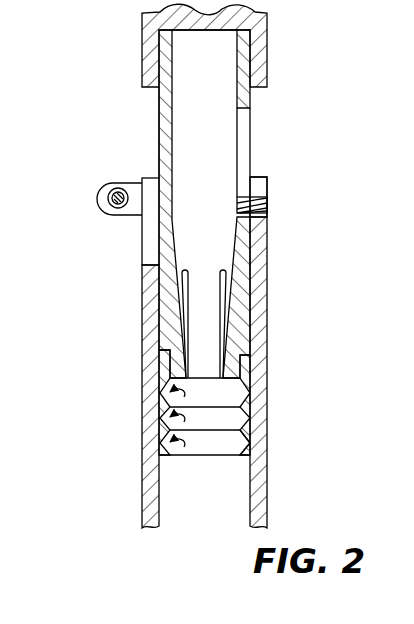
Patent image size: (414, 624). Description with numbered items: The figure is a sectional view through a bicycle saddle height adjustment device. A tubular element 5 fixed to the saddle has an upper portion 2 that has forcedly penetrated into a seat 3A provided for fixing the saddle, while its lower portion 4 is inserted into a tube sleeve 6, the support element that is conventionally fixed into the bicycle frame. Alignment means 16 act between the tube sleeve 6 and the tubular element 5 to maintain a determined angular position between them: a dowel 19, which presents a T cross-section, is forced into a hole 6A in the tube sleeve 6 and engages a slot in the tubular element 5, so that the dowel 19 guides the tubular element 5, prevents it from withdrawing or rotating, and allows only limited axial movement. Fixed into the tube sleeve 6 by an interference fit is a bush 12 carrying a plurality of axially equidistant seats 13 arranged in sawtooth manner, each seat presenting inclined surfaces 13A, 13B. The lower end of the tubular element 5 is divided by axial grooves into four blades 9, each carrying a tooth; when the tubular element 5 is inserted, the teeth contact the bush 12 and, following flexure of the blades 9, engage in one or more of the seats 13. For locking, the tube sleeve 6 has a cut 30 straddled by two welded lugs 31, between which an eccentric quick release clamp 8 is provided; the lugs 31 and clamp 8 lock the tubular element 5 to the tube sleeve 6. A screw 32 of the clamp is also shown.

The portion 2 is at (252, 67).
The seat 3A is at (199, 46).
The portion 4 is at (163, 152).
The tubular element 5 is at (156, 112).
The tube sleeve 6 is at (263, 323).
The hole 6A is at (263, 184).
The eccentric quick release clamp 8 is at (114, 224).
The blades 9 is at (166, 290).
The bush 12 is at (243, 408).
The seats 13 is at (160, 452).
The inclined surface 13A is at (240, 432).
The inclined surface 13B is at (240, 450).
The alignment means 16 is at (227, 203).
The dowel 19 is at (263, 213).
The cut 30 is at (146, 240).
The lugs 31 is at (106, 202).
The screw head 32 is at (114, 194).